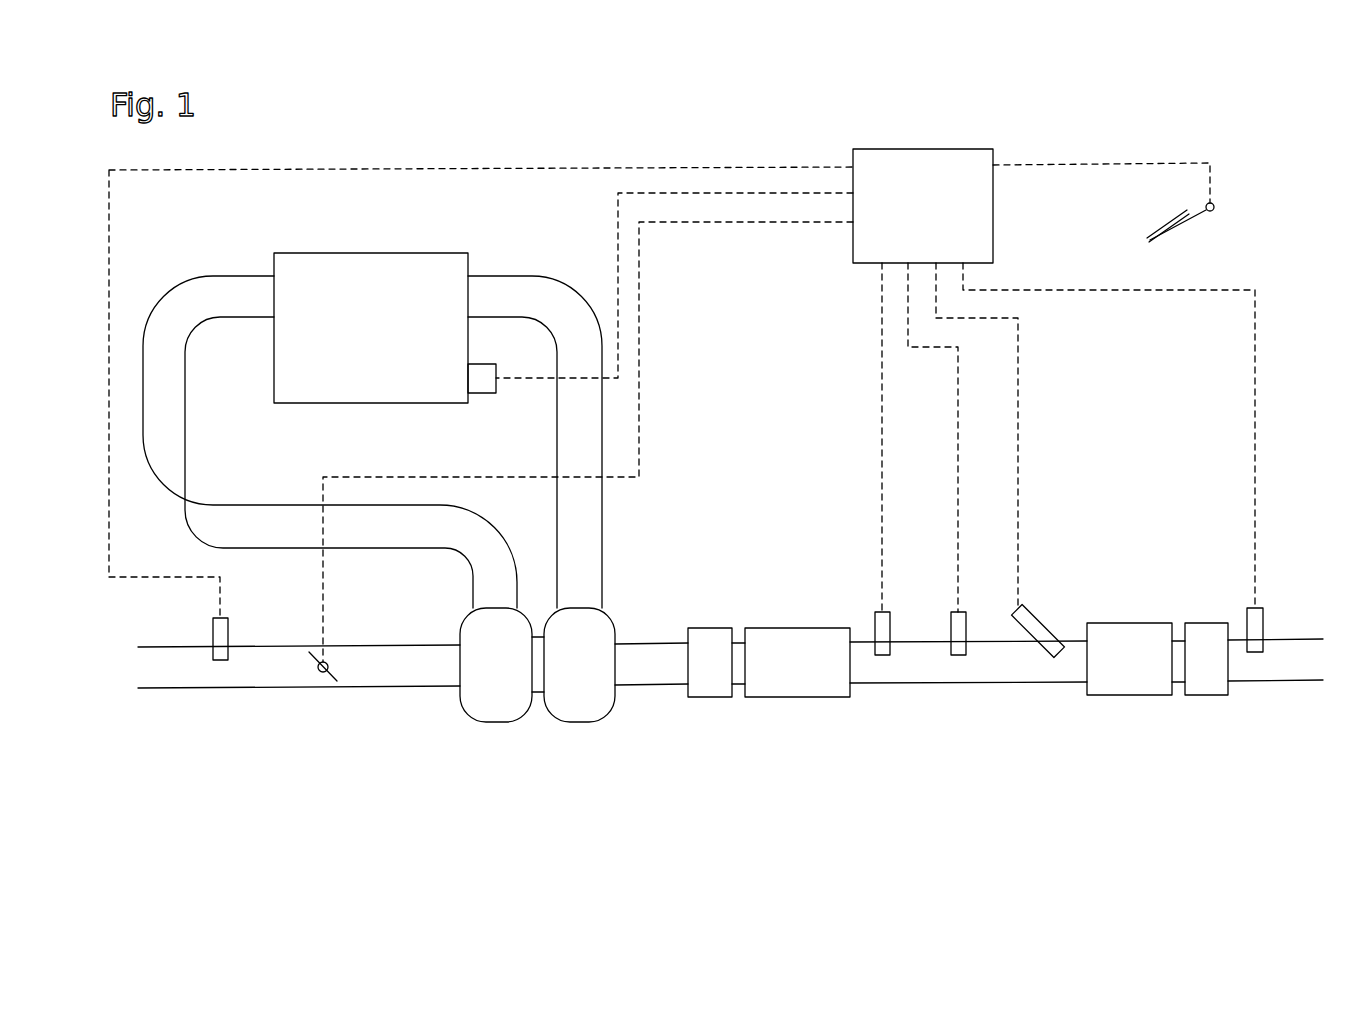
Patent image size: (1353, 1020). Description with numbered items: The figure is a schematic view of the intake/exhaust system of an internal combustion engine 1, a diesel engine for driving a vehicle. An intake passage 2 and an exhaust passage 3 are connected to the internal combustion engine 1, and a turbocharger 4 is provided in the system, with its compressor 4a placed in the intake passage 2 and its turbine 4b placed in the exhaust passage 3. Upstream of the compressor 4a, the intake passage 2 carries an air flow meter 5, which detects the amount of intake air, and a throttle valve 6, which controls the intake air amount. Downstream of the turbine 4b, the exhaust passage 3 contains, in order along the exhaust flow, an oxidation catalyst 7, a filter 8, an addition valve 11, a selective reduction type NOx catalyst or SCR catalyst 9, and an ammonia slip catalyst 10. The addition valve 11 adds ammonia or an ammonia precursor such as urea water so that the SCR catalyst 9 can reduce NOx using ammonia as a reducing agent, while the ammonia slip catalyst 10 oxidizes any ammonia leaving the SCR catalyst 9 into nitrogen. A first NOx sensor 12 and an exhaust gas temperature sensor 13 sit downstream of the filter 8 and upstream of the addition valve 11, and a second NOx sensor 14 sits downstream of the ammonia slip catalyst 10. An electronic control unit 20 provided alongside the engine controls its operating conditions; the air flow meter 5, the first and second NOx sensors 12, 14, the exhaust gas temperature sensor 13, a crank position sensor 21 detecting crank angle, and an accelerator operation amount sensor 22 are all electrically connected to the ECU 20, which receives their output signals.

The internal combustion engine 1 is at (375, 404).
The intake passage 2 is at (229, 273).
The exhaust passage 3 is at (514, 274).
The turbocharger 4 is at (537, 719).
The compressor 4a is at (497, 724).
The turbine 4b is at (579, 696).
The air flow meter 5 is at (229, 635).
The throttle valve 6 is at (319, 674).
The oxidation catalyst 7 is at (703, 699).
The filter 8 is at (795, 699).
The SCR catalyst 9 is at (1125, 697).
The ammonia slip catalyst 10 is at (1205, 697).
The addition valve 11 is at (1043, 612).
The first NOx sensor 12 is at (876, 614).
The exhaust gas temperature sensor 13 is at (969, 614).
The second NOx sensor 14 is at (1246, 618).
The electronic control unit 20 is at (912, 149).
The crank position sensor 21 is at (483, 396).
The accelerator operation amount sensor 22 is at (1218, 206).